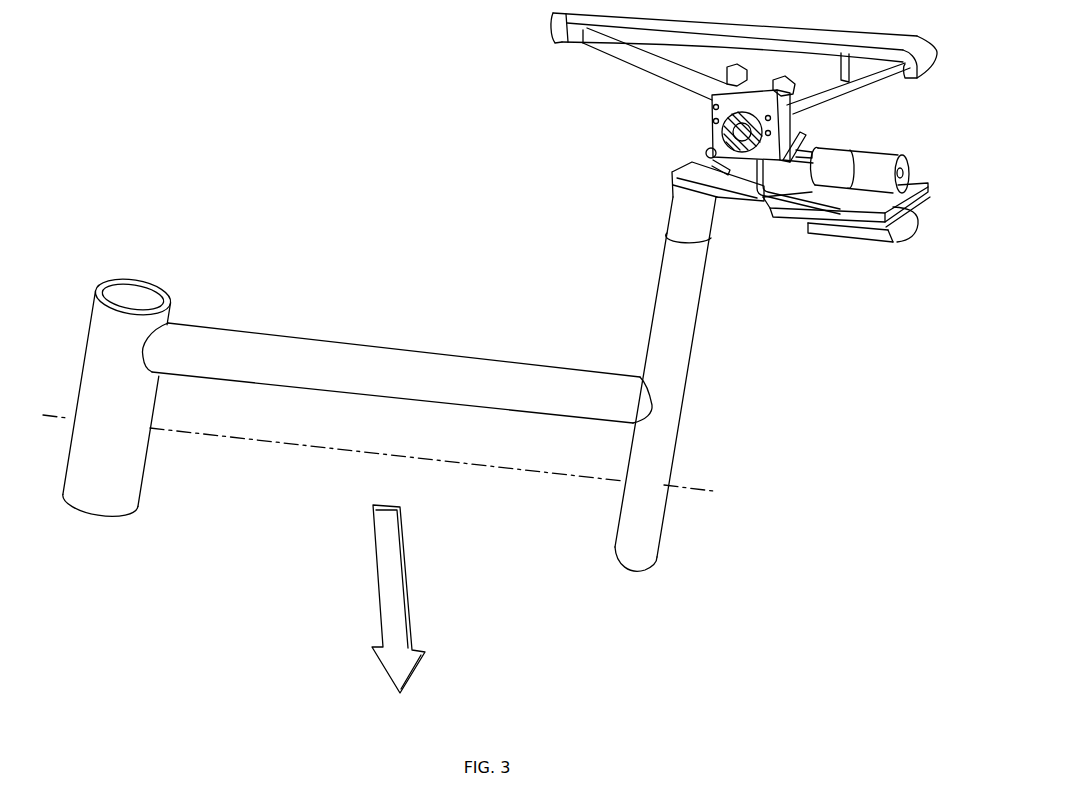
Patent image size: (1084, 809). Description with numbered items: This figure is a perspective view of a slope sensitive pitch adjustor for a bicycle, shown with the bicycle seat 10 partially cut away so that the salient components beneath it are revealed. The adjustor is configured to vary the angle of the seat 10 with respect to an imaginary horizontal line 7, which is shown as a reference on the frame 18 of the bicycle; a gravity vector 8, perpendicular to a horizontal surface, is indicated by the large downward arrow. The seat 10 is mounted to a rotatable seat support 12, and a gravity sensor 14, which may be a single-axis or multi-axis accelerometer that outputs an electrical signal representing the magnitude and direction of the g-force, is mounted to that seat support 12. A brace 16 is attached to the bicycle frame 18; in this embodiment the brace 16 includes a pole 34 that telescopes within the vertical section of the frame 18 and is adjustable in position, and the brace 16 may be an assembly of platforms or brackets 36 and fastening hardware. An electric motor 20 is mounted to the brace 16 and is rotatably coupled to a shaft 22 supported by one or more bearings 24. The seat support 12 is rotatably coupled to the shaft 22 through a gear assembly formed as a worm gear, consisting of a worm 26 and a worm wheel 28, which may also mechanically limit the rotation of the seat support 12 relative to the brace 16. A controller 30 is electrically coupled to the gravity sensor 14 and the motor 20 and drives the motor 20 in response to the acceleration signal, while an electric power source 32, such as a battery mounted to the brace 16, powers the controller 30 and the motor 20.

The imaginary horizontal line 7 is at (252, 441).
The gravity vector 8 is at (407, 597).
The bicycle seat 10 is at (865, 33).
The rotatable seat support 12 is at (843, 95).
The gravity sensor 14 is at (723, 73).
The brace 16 is at (675, 180).
The bicycle frame 18 is at (440, 352).
The electric motor 20 is at (873, 152).
The shaft 22 is at (810, 160).
The bearing 24 is at (712, 148).
The worm 26 is at (704, 155).
The worm wheel 28 is at (713, 122).
The controller 30 is at (793, 218).
The electric power source 32 is at (905, 240).
The pole 34 is at (672, 208).
The bracket 36 is at (910, 180).